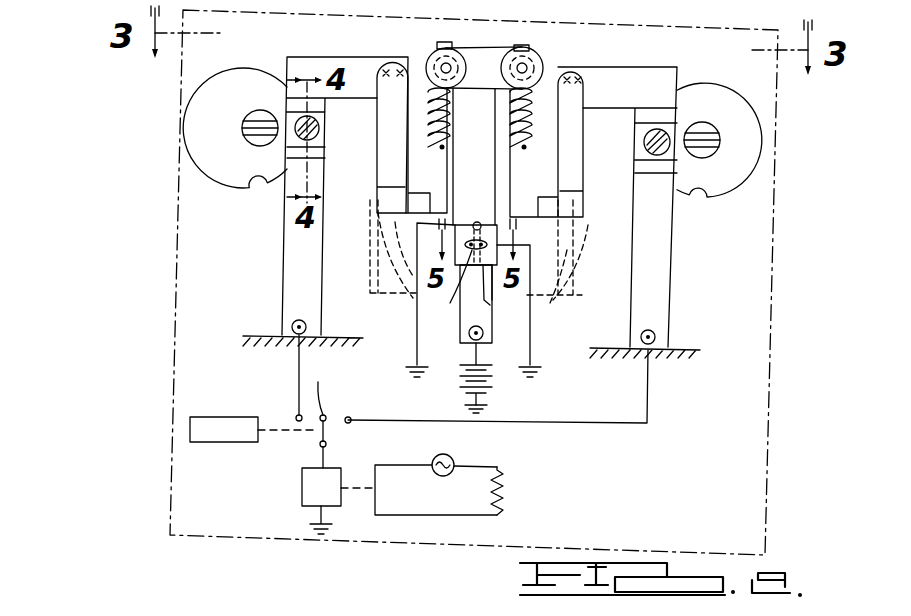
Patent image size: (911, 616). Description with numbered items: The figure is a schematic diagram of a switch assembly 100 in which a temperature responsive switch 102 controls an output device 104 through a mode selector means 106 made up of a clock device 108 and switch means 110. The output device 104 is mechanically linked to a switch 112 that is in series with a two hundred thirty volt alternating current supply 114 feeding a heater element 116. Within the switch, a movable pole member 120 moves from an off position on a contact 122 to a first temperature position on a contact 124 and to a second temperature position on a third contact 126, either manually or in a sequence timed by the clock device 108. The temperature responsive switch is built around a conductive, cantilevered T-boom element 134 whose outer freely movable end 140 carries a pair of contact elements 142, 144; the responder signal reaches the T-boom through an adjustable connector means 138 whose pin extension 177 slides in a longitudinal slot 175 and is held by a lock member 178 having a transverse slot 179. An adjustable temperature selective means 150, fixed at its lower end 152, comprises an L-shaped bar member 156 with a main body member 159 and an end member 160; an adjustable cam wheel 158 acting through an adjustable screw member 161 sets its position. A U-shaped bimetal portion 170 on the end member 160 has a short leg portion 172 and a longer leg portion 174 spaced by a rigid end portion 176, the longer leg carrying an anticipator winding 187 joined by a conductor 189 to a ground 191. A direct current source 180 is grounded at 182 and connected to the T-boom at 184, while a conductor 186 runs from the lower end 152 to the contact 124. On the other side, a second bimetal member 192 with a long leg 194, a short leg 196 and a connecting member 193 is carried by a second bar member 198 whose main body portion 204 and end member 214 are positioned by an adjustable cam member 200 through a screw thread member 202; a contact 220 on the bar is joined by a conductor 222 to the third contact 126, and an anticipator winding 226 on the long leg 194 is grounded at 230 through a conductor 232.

The switch assembly 100 is at (152, 158).
The temperature responsive switch 102 is at (175, 99).
The output device 104 is at (302, 482).
The mode selector means 106 is at (312, 452).
The clock device 108 is at (190, 430).
The switch means 110 is at (333, 407).
The switch 112 is at (380, 494).
The alternating current supply 114 is at (450, 455).
The heater element 116 is at (500, 482).
The movable pole member 120 is at (329, 441).
The contact 122 is at (334, 388).
The contact 124 is at (295, 418).
The third contact 126 is at (352, 417).
The T-boom element 134 is at (472, 173).
The adjustable connector means 138 is at (507, 220).
The outer freely movable end 140 is at (522, 47).
The contact element 142 is at (438, 50).
The contact element 144 is at (622, 70).
The adjustable temperature selective means 150 is at (312, 50).
The end of temperature selective means 152 is at (290, 327).
The L-shaped bar member 156 is at (285, 228).
The adjustable cam wheel 158 is at (215, 150).
The main body member 159 is at (292, 262).
The end member 160 is at (338, 57).
The adjustable screw member 161 is at (310, 124).
The U-shaped bimetal portion 170 is at (378, 167).
The short leg portion 172 is at (383, 139).
The longer leg portion 174 is at (497, 45).
The slot 175 is at (460, 334).
The rigid end portion 176 is at (390, 193).
The pin extension 177 is at (463, 290).
The lock member 178 is at (497, 232).
The slot 179 is at (489, 292).
The source of direct current electrical energy 180 is at (497, 386).
The ground 182 is at (480, 408).
The connection to T-boom 184 is at (493, 328).
The conductor 186 is at (295, 358).
The anticipator winding 187 is at (506, 45).
The conductor 189 is at (416, 314).
The ground 191 is at (458, 311).
The second bimetal member 192 is at (566, 125).
The connecting member 193 is at (540, 212).
The long leg 194 is at (523, 158).
The short leg 196 is at (570, 165).
The second bar member 198 is at (698, 230).
The adjustable cam member 200 is at (748, 132).
The screw thread member 202 is at (662, 134).
The main body portion 204 is at (668, 265).
The end member 214 is at (660, 67).
The contact 220 is at (656, 338).
The conductor 222 is at (650, 392).
The anticipator winding 226 is at (530, 110).
The ground 230 is at (540, 373).
The conductor 232 is at (533, 262).